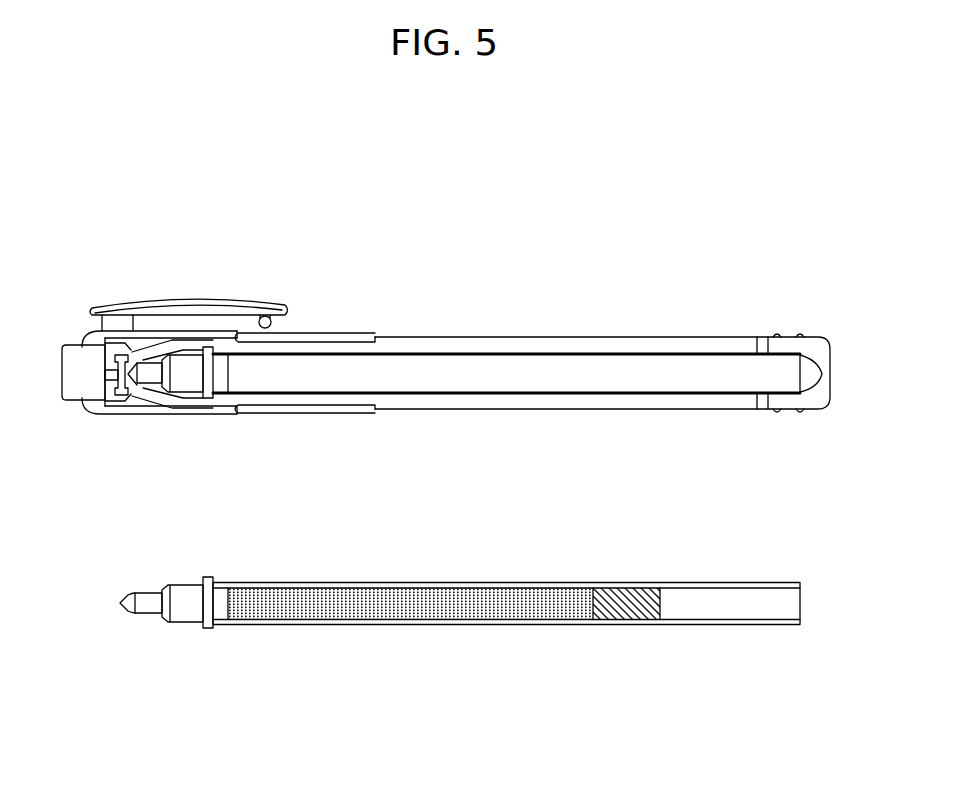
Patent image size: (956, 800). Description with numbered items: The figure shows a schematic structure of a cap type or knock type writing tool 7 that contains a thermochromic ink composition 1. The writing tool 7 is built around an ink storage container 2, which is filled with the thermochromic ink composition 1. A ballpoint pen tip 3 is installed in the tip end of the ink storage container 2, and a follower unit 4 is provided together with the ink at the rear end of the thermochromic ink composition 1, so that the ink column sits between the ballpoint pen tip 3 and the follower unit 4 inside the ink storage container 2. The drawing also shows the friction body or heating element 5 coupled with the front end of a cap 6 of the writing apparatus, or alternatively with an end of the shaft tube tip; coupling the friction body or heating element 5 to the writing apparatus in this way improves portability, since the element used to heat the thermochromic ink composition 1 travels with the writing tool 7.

The thermochromic ink composition 1 is at (413, 582).
The ink storage container 2 is at (613, 582).
The ballpoint pen tip 3 is at (145, 598).
The follower unit 4 is at (630, 620).
The friction body or heating element 5 is at (73, 402).
The cap 6 is at (192, 416).
The writing tool 7 is at (525, 337).